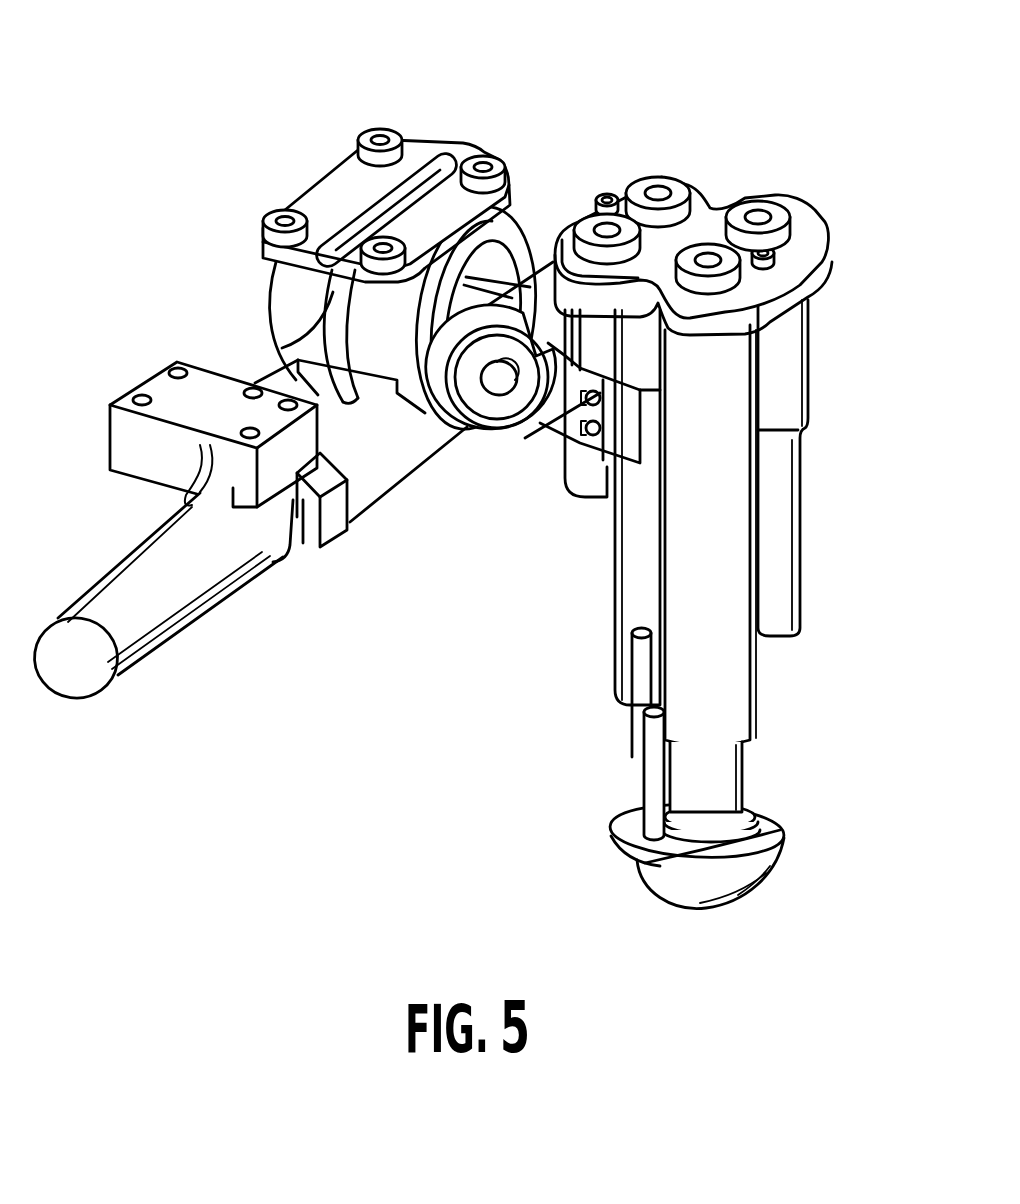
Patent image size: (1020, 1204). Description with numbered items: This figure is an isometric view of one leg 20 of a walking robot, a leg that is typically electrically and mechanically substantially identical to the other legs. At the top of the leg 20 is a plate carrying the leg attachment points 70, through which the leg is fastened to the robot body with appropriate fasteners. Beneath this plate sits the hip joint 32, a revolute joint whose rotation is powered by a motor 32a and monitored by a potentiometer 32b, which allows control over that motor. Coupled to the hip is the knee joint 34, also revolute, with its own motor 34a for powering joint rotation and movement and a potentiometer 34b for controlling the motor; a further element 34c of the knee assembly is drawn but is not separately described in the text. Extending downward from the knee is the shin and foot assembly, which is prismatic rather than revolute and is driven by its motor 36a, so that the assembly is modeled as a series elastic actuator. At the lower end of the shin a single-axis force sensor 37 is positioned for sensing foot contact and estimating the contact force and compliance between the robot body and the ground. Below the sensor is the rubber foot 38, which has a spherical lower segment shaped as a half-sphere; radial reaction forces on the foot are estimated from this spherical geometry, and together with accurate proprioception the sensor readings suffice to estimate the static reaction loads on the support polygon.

The leg 20 is at (660, 52).
The hip joint 32 is at (262, 292).
The motor 32a is at (170, 617).
The potentiometer 32b is at (160, 352).
The knee joint 34 is at (838, 272).
The motor 34a is at (690, 188).
The potentiometer 34b is at (517, 412).
The guide tube 34c is at (618, 666).
The motor 36a is at (768, 560).
The force sensor 37 is at (628, 830).
The rubber feet 38 is at (660, 880).
The leg attachment points 70 is at (358, 133).